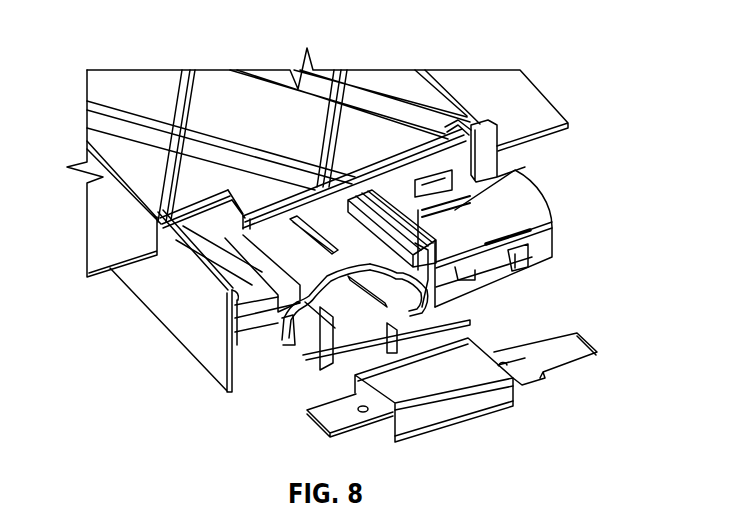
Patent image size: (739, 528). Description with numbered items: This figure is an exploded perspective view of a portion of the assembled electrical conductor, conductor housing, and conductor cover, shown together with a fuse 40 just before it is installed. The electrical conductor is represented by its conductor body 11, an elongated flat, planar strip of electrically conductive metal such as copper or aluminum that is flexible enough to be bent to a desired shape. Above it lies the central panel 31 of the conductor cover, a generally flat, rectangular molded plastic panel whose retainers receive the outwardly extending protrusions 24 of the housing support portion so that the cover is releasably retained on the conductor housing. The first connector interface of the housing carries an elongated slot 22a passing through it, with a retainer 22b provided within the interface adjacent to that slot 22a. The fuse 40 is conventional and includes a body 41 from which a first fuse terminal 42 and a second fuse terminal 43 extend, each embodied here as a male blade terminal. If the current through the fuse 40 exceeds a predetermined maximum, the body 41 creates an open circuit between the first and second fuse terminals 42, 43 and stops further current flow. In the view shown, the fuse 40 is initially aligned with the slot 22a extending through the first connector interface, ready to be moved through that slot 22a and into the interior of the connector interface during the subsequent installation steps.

The conductor body 11 is at (98, 245).
The central panel 31 is at (370, 137).
The protrusion 24 is at (435, 191).
The slot 22a is at (262, 335).
The retainer 22b is at (441, 321).
The fuse 40 is at (473, 362).
The body 41 is at (465, 410).
The first fuse terminal 42 is at (330, 412).
The second fuse terminal 43 is at (569, 344).